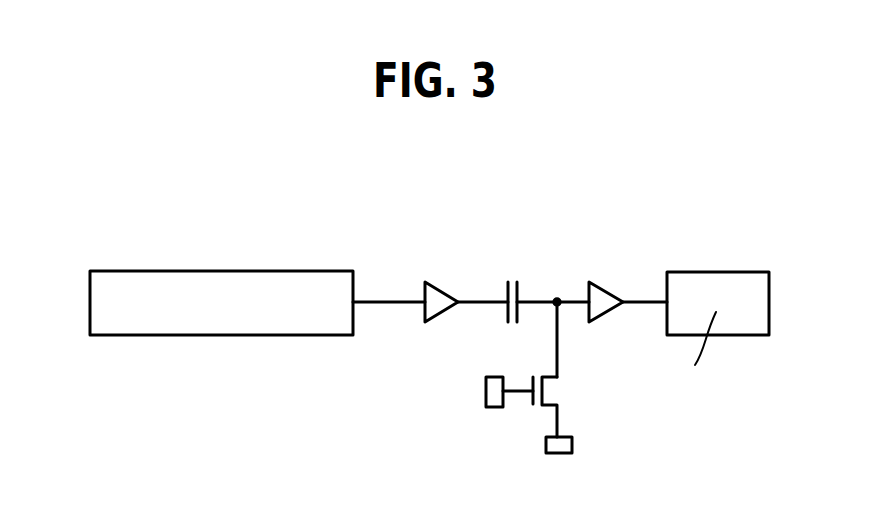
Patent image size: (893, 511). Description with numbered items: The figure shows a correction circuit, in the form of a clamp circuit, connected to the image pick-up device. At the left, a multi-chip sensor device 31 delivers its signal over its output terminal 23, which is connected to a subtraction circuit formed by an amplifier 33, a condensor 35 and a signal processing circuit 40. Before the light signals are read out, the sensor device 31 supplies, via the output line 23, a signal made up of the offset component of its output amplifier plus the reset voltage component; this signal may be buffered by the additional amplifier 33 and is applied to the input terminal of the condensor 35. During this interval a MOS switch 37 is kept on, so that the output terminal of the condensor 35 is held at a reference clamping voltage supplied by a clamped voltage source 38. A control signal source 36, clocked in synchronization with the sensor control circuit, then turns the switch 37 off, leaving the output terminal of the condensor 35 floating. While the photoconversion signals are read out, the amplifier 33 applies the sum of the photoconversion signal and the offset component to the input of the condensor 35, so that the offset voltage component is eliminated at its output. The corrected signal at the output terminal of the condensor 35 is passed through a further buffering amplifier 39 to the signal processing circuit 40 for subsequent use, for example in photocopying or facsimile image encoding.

The multi-chip sensor device 31 is at (149, 271).
The output terminal 23 is at (361, 300).
The amplifier 33 is at (437, 282).
The condensor 35 is at (513, 282).
The control signal source 36 is at (487, 380).
The MOS switch 37 is at (537, 408).
The clamped voltage source 38 is at (573, 441).
The buffering amplifier 39 is at (606, 282).
The signal processing circuit 40 is at (723, 272).